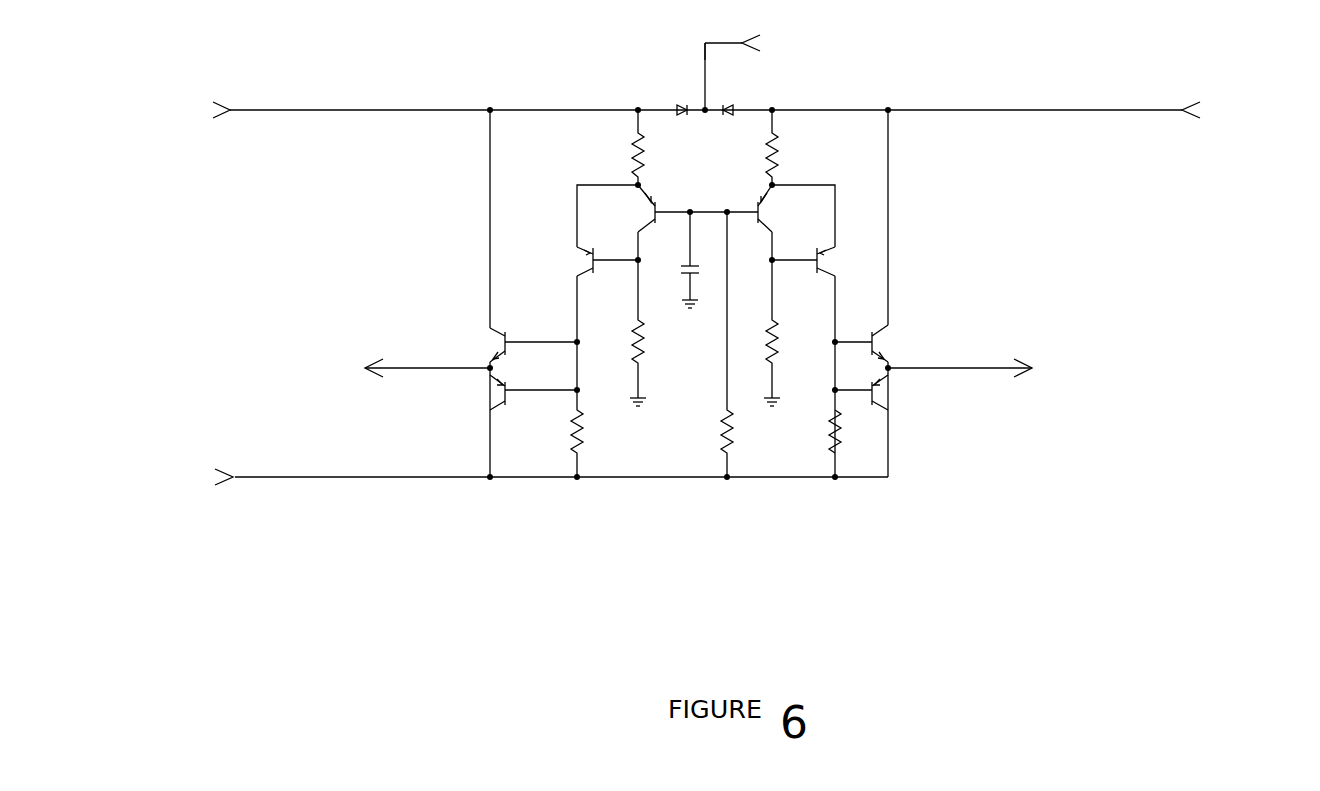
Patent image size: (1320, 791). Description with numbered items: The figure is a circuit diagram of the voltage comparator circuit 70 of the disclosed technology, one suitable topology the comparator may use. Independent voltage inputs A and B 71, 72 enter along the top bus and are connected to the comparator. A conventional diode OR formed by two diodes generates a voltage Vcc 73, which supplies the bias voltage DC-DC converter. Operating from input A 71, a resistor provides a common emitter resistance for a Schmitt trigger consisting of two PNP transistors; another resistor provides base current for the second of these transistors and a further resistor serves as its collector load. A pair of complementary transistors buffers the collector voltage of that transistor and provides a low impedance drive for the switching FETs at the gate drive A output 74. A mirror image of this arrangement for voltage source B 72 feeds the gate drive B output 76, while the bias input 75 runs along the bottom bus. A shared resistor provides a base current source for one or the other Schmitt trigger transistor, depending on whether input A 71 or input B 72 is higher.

The circuit 70 is at (706, 311).
The voltage input A 71 is at (195, 90).
The voltage input B 72 is at (1217, 87).
The voltage Vcc 73 is at (765, 32).
The gate drive A output 74 is at (364, 346).
The bias input terminal 75 is at (178, 458).
The gate drive B output 76 is at (1025, 347).